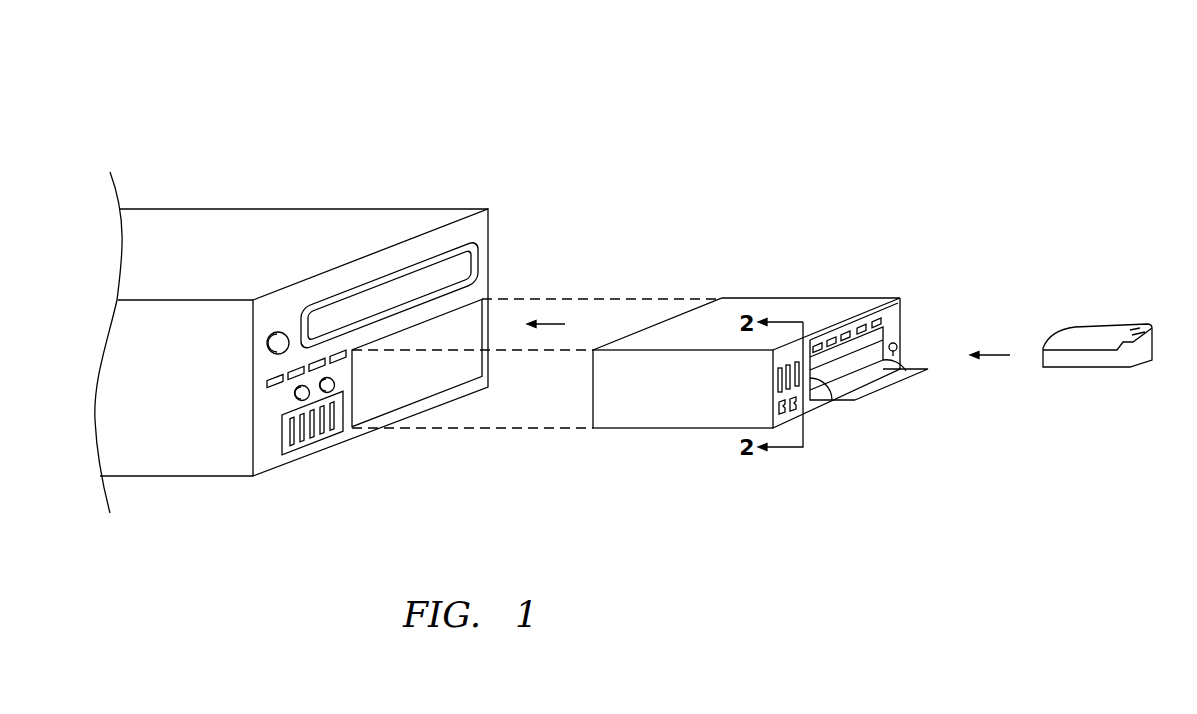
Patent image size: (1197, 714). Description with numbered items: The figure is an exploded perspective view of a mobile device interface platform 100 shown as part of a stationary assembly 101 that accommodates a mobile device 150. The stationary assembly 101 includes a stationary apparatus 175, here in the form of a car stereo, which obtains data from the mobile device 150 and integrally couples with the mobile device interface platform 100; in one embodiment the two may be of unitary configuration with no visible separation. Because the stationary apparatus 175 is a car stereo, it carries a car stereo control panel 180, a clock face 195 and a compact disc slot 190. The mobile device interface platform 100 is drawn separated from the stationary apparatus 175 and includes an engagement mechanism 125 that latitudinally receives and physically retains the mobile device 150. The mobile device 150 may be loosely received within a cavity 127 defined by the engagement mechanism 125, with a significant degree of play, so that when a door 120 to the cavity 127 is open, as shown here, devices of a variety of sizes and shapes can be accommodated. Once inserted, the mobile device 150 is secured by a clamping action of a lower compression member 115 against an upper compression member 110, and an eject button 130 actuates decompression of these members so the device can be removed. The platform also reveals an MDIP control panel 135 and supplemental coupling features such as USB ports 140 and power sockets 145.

The mobile device interface platform 100 is at (725, 268).
The stationary assembly 101 is at (127, 108).
The upper compression member 110 is at (832, 368).
The lower compression member 115 is at (838, 383).
The door 120 is at (867, 387).
The engagement mechanism 125 is at (873, 382).
The cavity 127 is at (860, 358).
The eject button 130 is at (897, 349).
The MDIP control panel 135 is at (887, 321).
The USB ports 140 is at (777, 387).
The power sockets 145 is at (772, 410).
The mobile device 150 is at (1090, 328).
The stationary apparatus 175 is at (295, 227).
The car stereo control panel 180 is at (277, 403).
The compact disc slot 190 is at (437, 265).
The clock face 195 is at (463, 273).